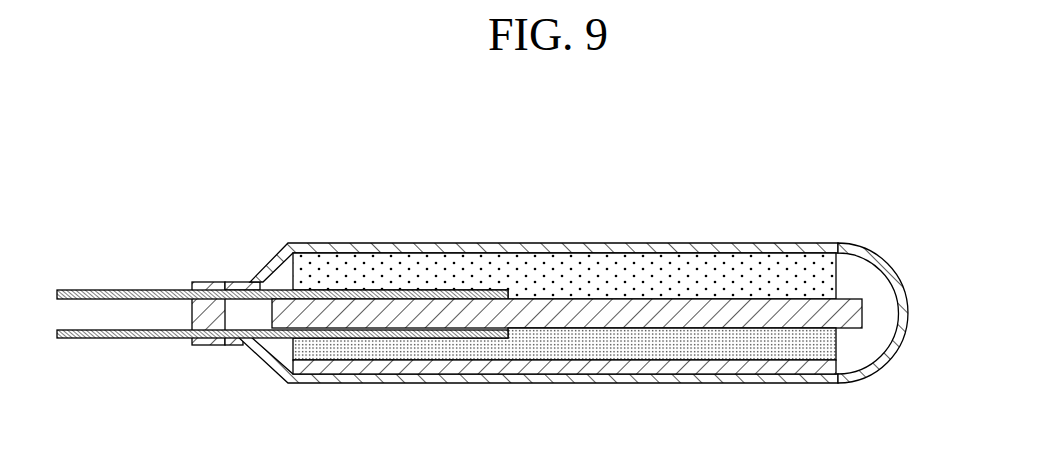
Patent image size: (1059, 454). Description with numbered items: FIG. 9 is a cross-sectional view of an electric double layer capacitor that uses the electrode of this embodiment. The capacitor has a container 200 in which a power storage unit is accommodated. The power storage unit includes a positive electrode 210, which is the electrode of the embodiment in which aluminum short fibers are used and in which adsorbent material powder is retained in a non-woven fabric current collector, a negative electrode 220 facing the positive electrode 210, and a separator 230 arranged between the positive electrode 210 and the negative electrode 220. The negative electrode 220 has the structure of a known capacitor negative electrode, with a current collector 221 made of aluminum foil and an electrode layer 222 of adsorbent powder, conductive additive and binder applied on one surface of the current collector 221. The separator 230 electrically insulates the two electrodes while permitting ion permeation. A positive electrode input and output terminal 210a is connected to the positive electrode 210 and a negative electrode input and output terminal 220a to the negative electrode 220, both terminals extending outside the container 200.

The container 200 is at (878, 255).
The positive electrode 210 is at (459, 237).
The positive electrode input and output terminal 210a is at (125, 290).
The negative electrode 220 is at (470, 390).
The negative electrode input and output terminal 220a is at (125, 338).
The current collector 221 is at (708, 368).
The electrode layer 222 is at (585, 343).
The separator 230 is at (863, 307).